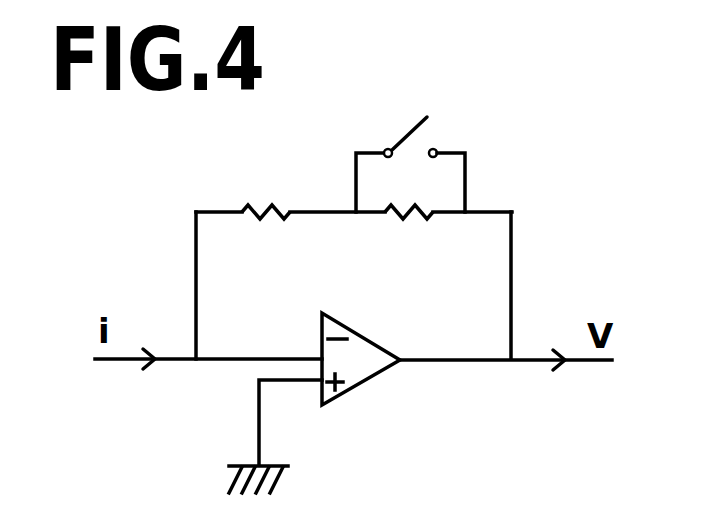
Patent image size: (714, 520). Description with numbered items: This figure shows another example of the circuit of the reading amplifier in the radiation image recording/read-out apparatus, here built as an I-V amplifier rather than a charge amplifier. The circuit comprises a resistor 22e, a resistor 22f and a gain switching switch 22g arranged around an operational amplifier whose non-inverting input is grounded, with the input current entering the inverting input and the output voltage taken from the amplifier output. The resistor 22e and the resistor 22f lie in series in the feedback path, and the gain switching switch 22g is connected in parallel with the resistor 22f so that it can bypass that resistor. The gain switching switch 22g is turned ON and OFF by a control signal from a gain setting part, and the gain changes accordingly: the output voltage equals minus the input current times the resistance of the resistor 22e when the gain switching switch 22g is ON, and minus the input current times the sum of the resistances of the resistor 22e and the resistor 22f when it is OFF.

The resistor 22e is at (240, 198).
The resistor 22f is at (431, 189).
The gain switching switch 22g is at (443, 128).